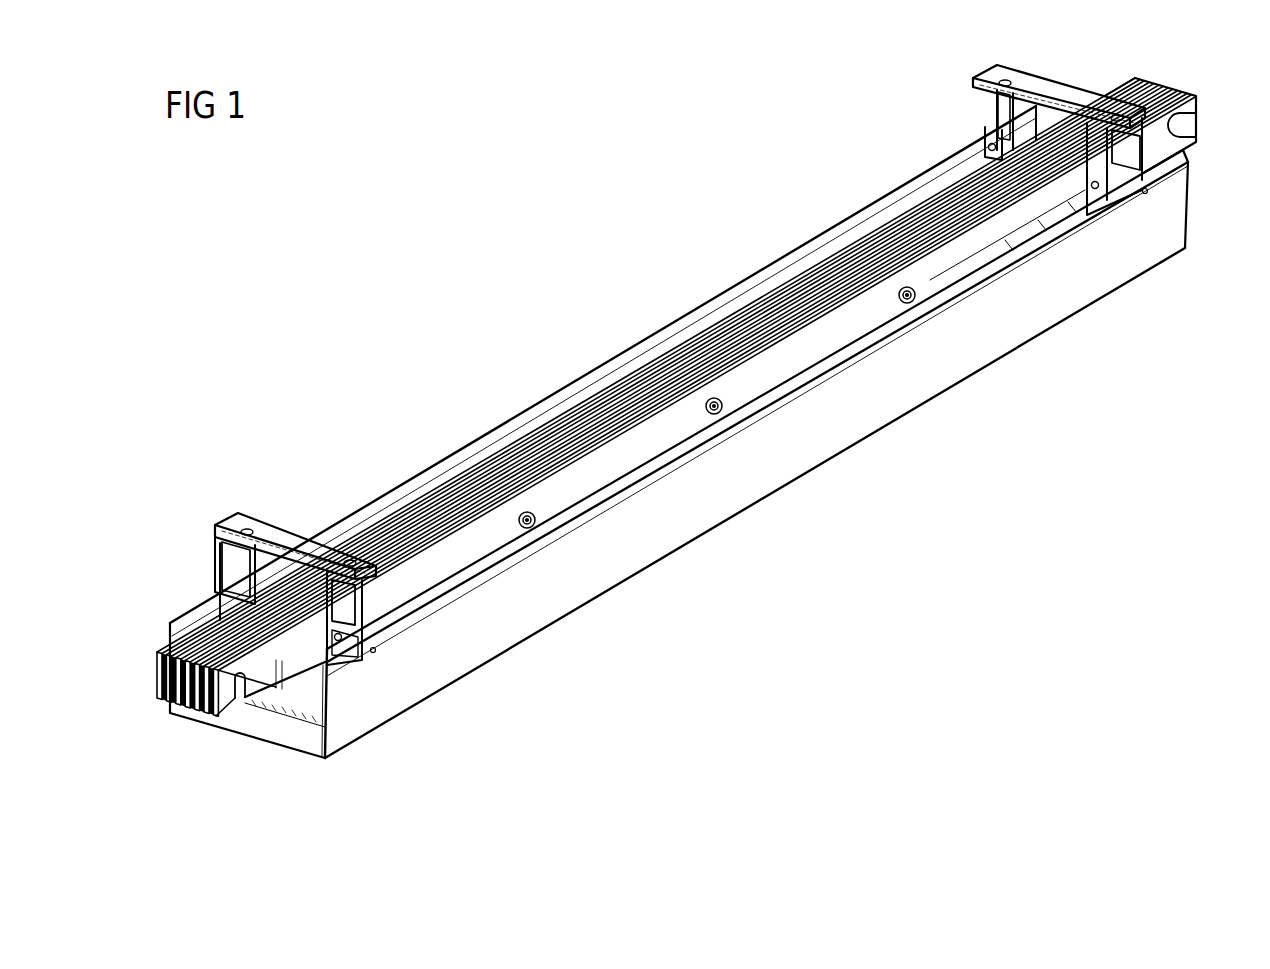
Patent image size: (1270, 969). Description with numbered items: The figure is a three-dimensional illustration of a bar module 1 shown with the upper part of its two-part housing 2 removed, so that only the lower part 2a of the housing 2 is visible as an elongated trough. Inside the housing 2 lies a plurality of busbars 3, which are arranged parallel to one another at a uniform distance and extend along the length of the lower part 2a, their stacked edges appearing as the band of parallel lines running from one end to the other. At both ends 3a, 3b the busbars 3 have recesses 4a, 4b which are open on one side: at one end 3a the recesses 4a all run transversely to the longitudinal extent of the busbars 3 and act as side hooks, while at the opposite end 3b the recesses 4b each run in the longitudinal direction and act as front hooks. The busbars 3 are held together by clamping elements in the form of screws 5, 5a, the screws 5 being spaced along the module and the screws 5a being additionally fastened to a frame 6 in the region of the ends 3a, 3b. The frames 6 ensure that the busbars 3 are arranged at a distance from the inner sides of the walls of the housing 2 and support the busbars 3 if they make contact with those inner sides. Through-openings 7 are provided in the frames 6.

The bar module 1 is at (560, 292).
The two-part housing 2 is at (648, 548).
The lower part 2a is at (858, 430).
The busbars 3 is at (985, 255).
The end 3a is at (138, 690).
The opposite end 3b is at (1192, 78).
The recesses 4a is at (241, 706).
The recesses 4b is at (1196, 126).
The screws 5 is at (536, 526).
The screws 5a is at (344, 642).
The frame 6 is at (298, 540).
The through-openings 7 is at (230, 565).